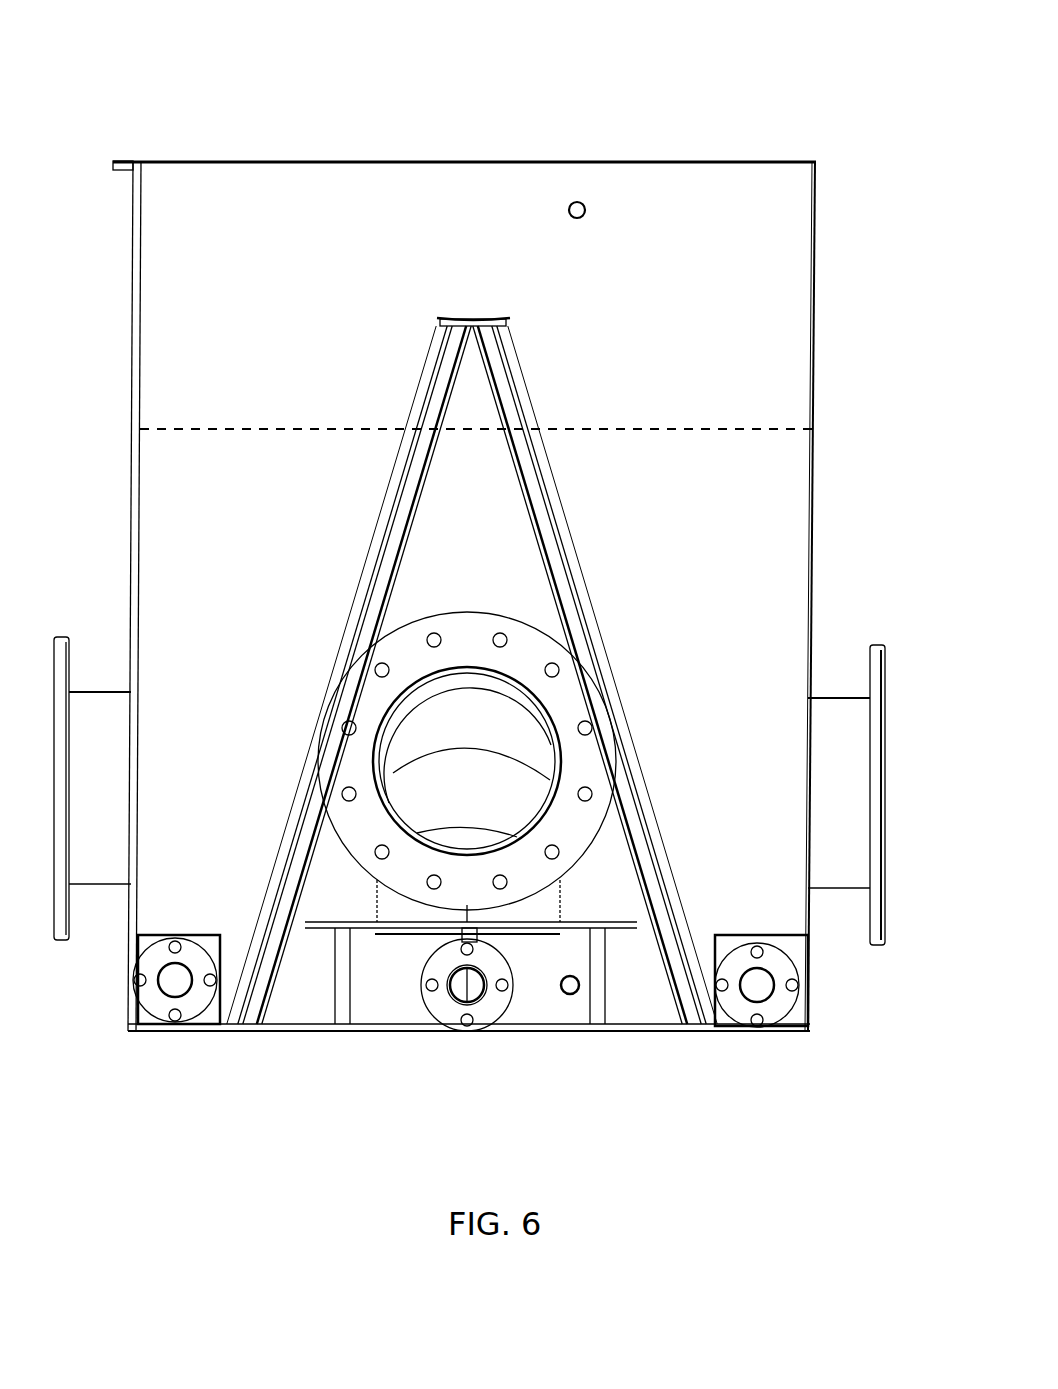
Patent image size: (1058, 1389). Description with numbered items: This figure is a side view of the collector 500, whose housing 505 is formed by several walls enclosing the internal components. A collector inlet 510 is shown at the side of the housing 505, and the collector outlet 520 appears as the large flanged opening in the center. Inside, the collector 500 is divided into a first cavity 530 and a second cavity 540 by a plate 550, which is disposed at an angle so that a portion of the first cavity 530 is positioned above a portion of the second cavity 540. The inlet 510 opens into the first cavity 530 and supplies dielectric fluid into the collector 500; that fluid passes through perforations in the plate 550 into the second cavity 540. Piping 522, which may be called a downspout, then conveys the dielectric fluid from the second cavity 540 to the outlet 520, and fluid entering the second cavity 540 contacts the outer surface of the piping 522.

The collector 500 is at (680, 114).
The housing 505 is at (813, 412).
The collector inlet 510 is at (902, 782).
The collector outlet 520 is at (575, 707).
The piping 522 is at (508, 713).
The first cavity 530 is at (718, 536).
The second cavity 540 is at (488, 562).
The plate 550 is at (512, 372).